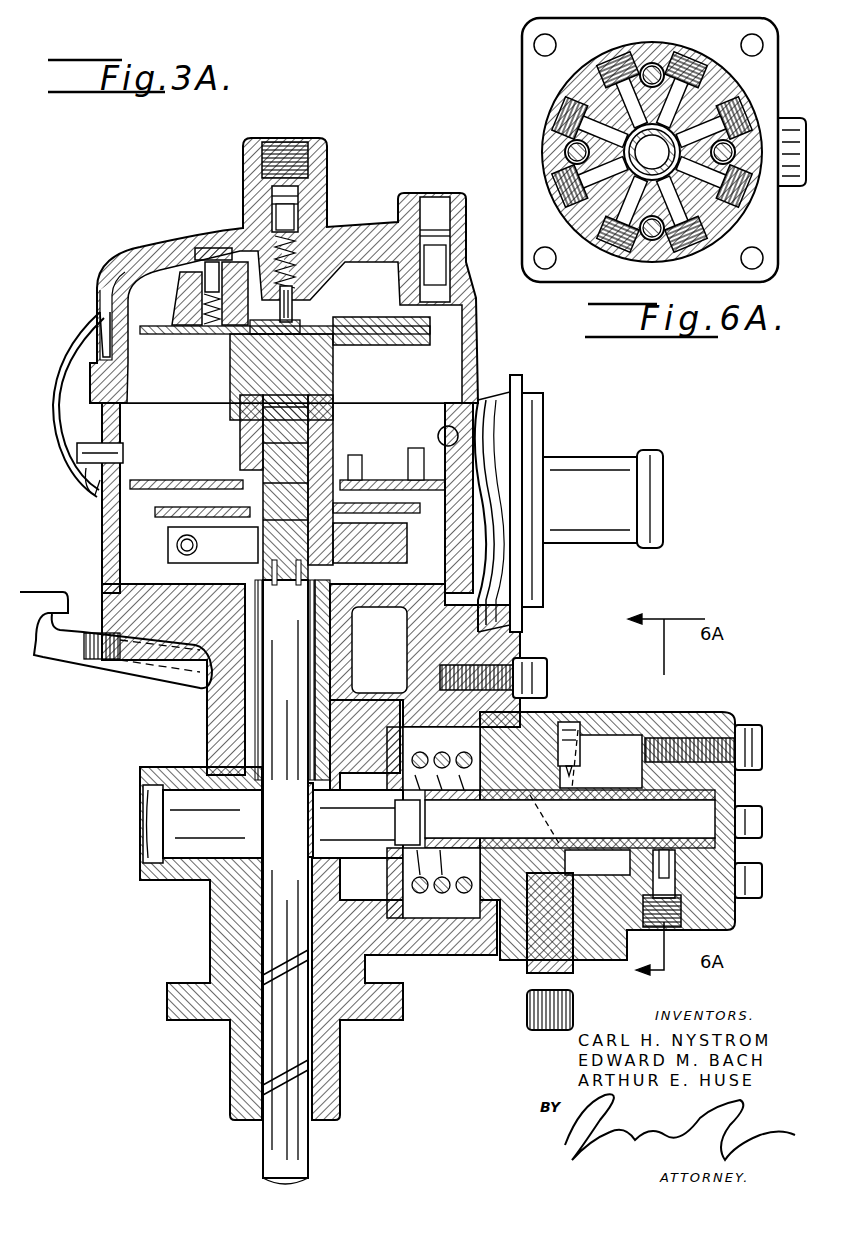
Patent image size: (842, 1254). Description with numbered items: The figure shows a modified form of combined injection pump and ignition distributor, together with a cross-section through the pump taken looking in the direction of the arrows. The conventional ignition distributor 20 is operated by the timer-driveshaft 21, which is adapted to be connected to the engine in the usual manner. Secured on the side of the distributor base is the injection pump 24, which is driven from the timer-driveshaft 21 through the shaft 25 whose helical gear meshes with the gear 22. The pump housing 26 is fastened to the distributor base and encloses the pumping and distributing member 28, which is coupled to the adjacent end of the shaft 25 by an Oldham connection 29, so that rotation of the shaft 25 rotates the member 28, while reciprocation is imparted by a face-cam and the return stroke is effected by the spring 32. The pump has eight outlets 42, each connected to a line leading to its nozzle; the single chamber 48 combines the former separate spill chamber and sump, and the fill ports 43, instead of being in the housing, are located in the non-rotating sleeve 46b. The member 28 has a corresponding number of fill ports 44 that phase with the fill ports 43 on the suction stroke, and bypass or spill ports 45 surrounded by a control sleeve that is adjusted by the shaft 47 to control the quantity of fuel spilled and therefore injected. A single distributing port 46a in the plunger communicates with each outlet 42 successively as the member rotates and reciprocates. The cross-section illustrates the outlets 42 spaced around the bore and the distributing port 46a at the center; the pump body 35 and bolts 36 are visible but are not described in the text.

In FIG. 3A, the ignition distributor 20 is at (480, 370).
In FIG. 3A, the timer-driveshaft 21 is at (276, 704).
In FIG. 3A, the gear 22 is at (203, 880).
In FIG. 3A, the injection pump 24 is at (593, 829).
In FIG. 3A, the shaft 25 is at (172, 812).
In FIG. 6A, the pump housing 26 is at (575, 74).
In FIG. 3A, the pumping and distributing member 28 is at (492, 800).
In FIG. 3A, the Oldham connection 29 is at (412, 822).
In FIG. 3A, the spring 32 is at (432, 893).
In FIG. 3A, the pump housing 35 is at (712, 712).
In FIG. 3A, the bolt 36 is at (762, 738).
In FIG. 6A, the bolt 36 is at (652, 63).
In FIG. 3A, the outlets 42 is at (668, 930).
In FIG. 6A, the outlets 42 is at (615, 55).
In FIG. 3A, the fill ports 43 is at (578, 728).
In FIG. 3A, the fill ports 44 is at (580, 810).
In FIG. 3A, the bypass or spill ports 45 is at (525, 812).
In FIG. 3A, the distributing port 46a is at (662, 848).
In FIG. 6A, the distributing port 46a is at (652, 152).
In FIG. 3A, the non-rotating sleeve 46b is at (612, 768).
In FIG. 3A, the shaft 47 is at (527, 1004).
In FIG. 3A, the single chamber 48 is at (598, 745).